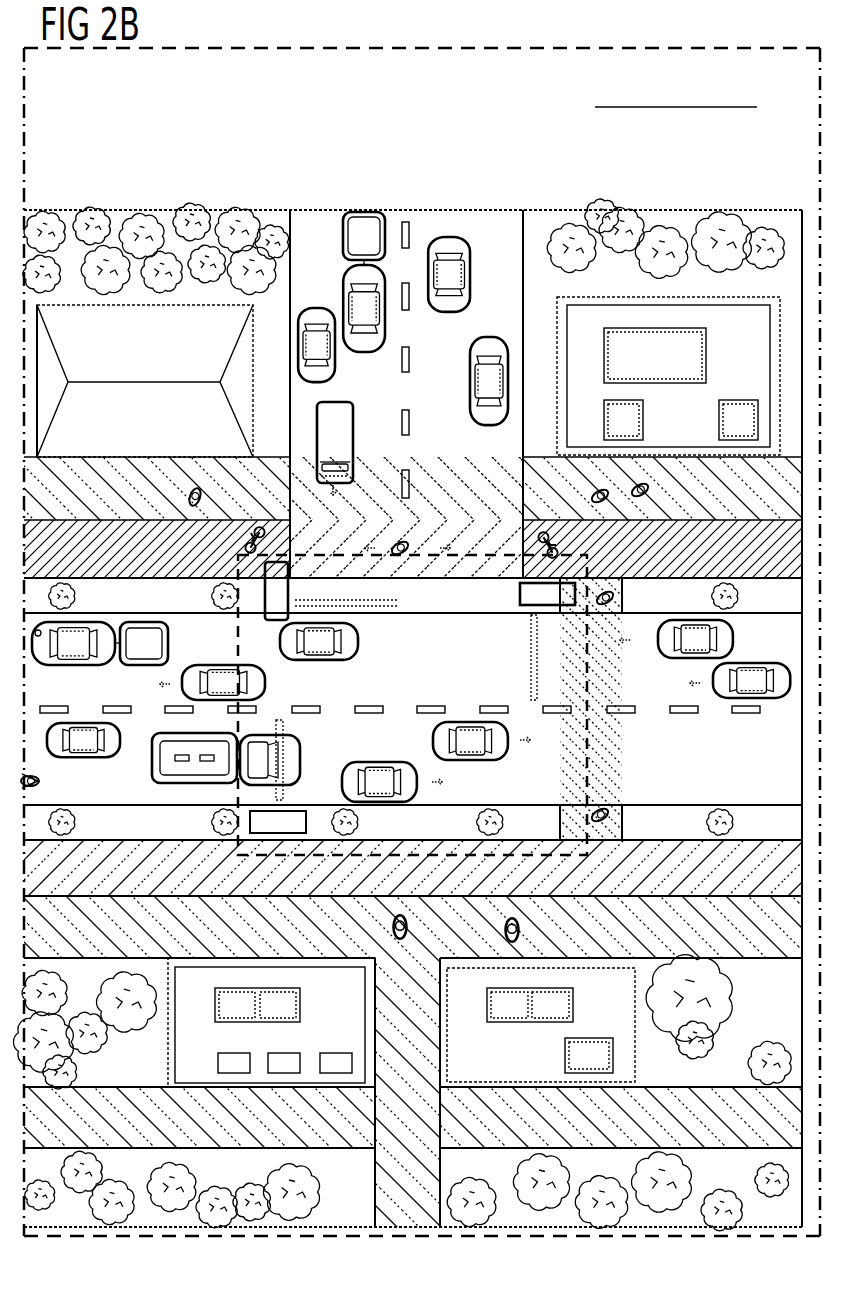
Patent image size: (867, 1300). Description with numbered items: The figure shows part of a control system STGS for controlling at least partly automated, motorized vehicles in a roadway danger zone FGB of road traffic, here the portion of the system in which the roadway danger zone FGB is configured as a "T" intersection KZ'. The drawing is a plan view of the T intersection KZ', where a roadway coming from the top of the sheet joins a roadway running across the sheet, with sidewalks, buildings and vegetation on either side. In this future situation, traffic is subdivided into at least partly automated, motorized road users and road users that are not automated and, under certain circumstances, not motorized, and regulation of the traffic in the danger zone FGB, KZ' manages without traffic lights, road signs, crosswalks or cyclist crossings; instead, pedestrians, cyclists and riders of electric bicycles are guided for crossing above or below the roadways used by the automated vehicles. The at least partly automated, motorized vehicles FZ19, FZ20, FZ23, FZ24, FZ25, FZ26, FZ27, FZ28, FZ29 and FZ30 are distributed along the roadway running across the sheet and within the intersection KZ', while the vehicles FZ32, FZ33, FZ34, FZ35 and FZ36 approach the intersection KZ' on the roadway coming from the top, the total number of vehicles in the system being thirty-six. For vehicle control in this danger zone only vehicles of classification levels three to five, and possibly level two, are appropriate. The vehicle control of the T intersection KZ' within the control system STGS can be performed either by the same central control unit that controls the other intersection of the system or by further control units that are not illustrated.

The control system STGS is at (820, 151).
The roadway danger zone FGB is at (592, 725).
The T intersection KZ' is at (412, 705).
The at least partly automated, motorized vehicle FZ19 is at (85, 723).
The at least partly automated, motorized vehicle FZ20 is at (465, 722).
The at least partly automated, motorized vehicle FZ23 is at (42, 782).
The at least partly automated, motorized vehicle FZ24 is at (175, 783).
The at least partly automated, motorized vehicle FZ25 is at (375, 762).
The at least partly automated, motorized vehicle FZ26 is at (770, 698).
The at least partly automated, motorized vehicle FZ27 is at (265, 680).
The at least partly automated, motorized vehicle FZ28 is at (670, 658).
The at least partly automated, motorized vehicle FZ29 is at (358, 638).
The at least partly automated, motorized vehicle FZ30 is at (85, 622).
The at least partly automated, motorized vehicle FZ32 is at (335, 355).
The at least partly automated, motorized vehicle FZ33 is at (353, 440).
The at least partly automated, motorized vehicle FZ34 is at (385, 312).
The at least partly automated, motorized vehicle FZ35 is at (450, 237).
The at least partly automated, motorized vehicle FZ36 is at (490, 337).